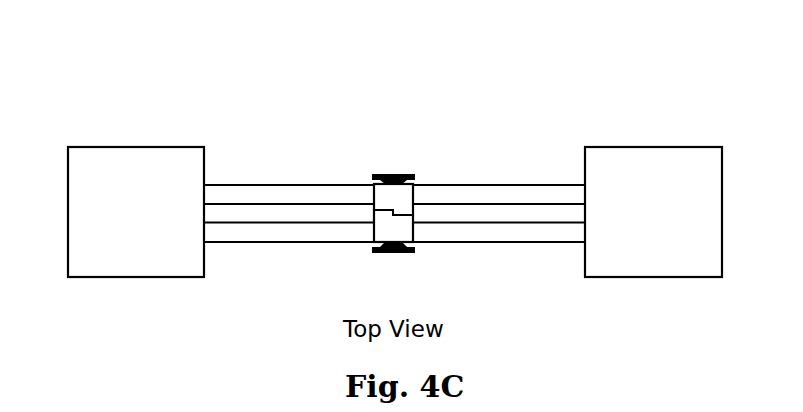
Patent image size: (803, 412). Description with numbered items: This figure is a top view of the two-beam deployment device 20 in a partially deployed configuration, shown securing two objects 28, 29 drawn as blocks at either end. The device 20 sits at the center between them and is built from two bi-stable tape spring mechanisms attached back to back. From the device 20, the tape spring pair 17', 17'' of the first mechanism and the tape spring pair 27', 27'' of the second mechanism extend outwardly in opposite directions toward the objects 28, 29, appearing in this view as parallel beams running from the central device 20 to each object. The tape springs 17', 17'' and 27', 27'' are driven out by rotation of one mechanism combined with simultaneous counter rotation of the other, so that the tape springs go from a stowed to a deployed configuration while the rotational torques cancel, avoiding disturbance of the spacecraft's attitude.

The object 28 is at (102, 182).
The object 29 is at (711, 180).
The 2-beam deployment device 20 is at (392, 157).
The tape spring 27'' is at (276, 139).
The tape spring 27' is at (499, 140).
The tape spring 17' is at (289, 275).
The tape spring 17'' is at (520, 143).